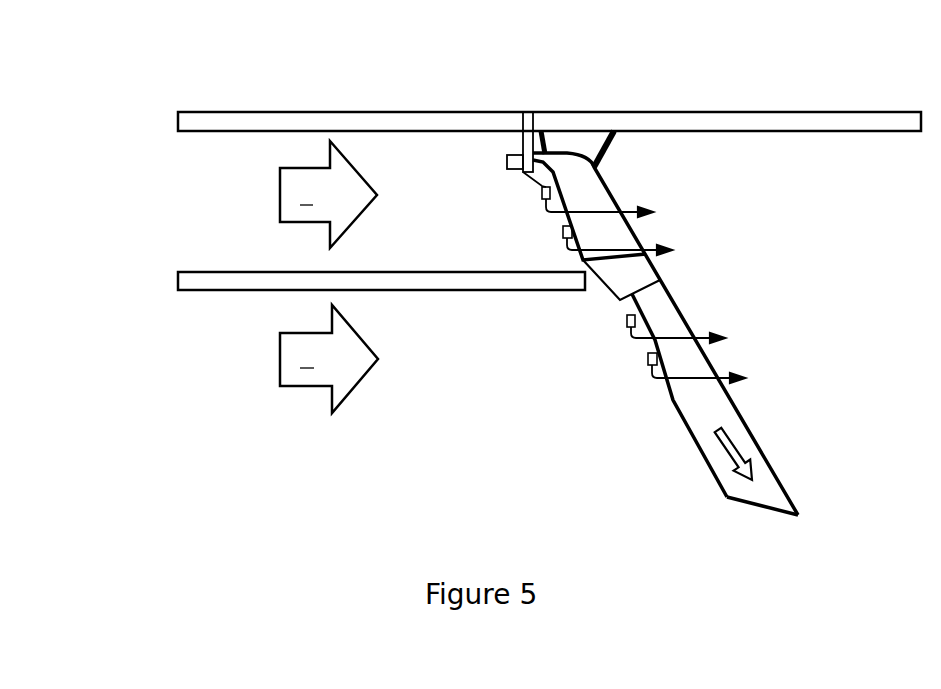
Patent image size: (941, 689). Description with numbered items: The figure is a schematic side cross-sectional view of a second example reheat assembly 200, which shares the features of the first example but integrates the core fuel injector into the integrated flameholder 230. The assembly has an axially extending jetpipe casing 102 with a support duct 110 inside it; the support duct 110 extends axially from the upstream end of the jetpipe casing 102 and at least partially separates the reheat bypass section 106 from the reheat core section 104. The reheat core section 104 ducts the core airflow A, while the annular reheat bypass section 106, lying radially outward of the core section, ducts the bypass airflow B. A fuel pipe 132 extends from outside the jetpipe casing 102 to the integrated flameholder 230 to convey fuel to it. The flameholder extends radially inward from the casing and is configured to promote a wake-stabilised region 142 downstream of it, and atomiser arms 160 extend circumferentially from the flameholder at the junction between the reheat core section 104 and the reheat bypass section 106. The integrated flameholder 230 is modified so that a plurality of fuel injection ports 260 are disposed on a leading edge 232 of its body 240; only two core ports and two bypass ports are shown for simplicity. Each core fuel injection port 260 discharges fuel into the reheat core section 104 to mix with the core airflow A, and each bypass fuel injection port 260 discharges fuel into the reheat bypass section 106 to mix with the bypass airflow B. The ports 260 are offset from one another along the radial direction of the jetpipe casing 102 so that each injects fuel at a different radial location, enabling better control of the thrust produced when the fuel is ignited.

The second example reheat assembly 200 is at (115, 53).
The jetpipe casing 102 is at (197, 122).
The support duct 110 is at (188, 277).
The reheat bypass section 106 is at (243, 181).
The reheat core section 104 is at (243, 350).
The fuel pipe 132 is at (529, 118).
The atomiser arm 160 is at (643, 270).
The body 240 is at (606, 285).
The fuel injection ports 260 is at (562, 236).
The leading edge 232 is at (685, 422).
The integrated flameholder 230 is at (760, 495).
The wake-stabilised region 142 is at (823, 305).